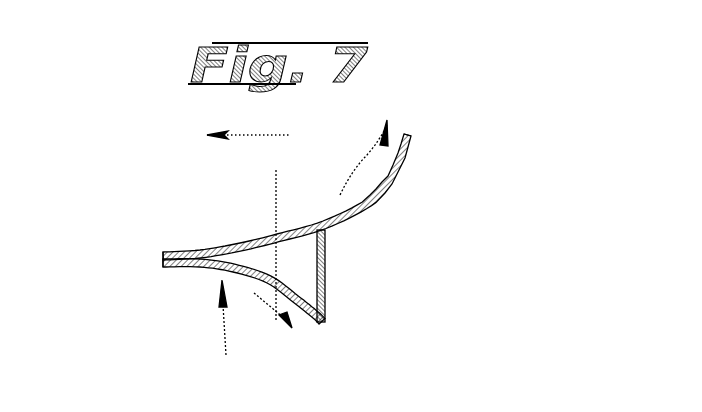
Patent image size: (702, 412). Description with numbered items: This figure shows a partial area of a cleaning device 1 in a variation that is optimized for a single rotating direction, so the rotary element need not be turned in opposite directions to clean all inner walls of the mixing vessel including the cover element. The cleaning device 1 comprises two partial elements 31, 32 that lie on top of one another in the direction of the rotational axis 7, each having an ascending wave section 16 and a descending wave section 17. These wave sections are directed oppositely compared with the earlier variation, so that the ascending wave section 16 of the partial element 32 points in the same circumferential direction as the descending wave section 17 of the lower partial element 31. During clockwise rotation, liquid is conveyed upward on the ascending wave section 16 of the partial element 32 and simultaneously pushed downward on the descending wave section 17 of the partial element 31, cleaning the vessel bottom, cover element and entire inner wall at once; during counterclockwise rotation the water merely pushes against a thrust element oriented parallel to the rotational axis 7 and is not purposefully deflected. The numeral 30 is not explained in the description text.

The cleaning device 1 is at (450, 162).
The rotational axis 7 is at (274, 190).
The ascending wave section 16 is at (177, 268).
The descending wave section 17 is at (200, 251).
The web / vertical wall 30 is at (326, 277).
The partial element 31 is at (254, 335).
The partial element 32 is at (299, 219).